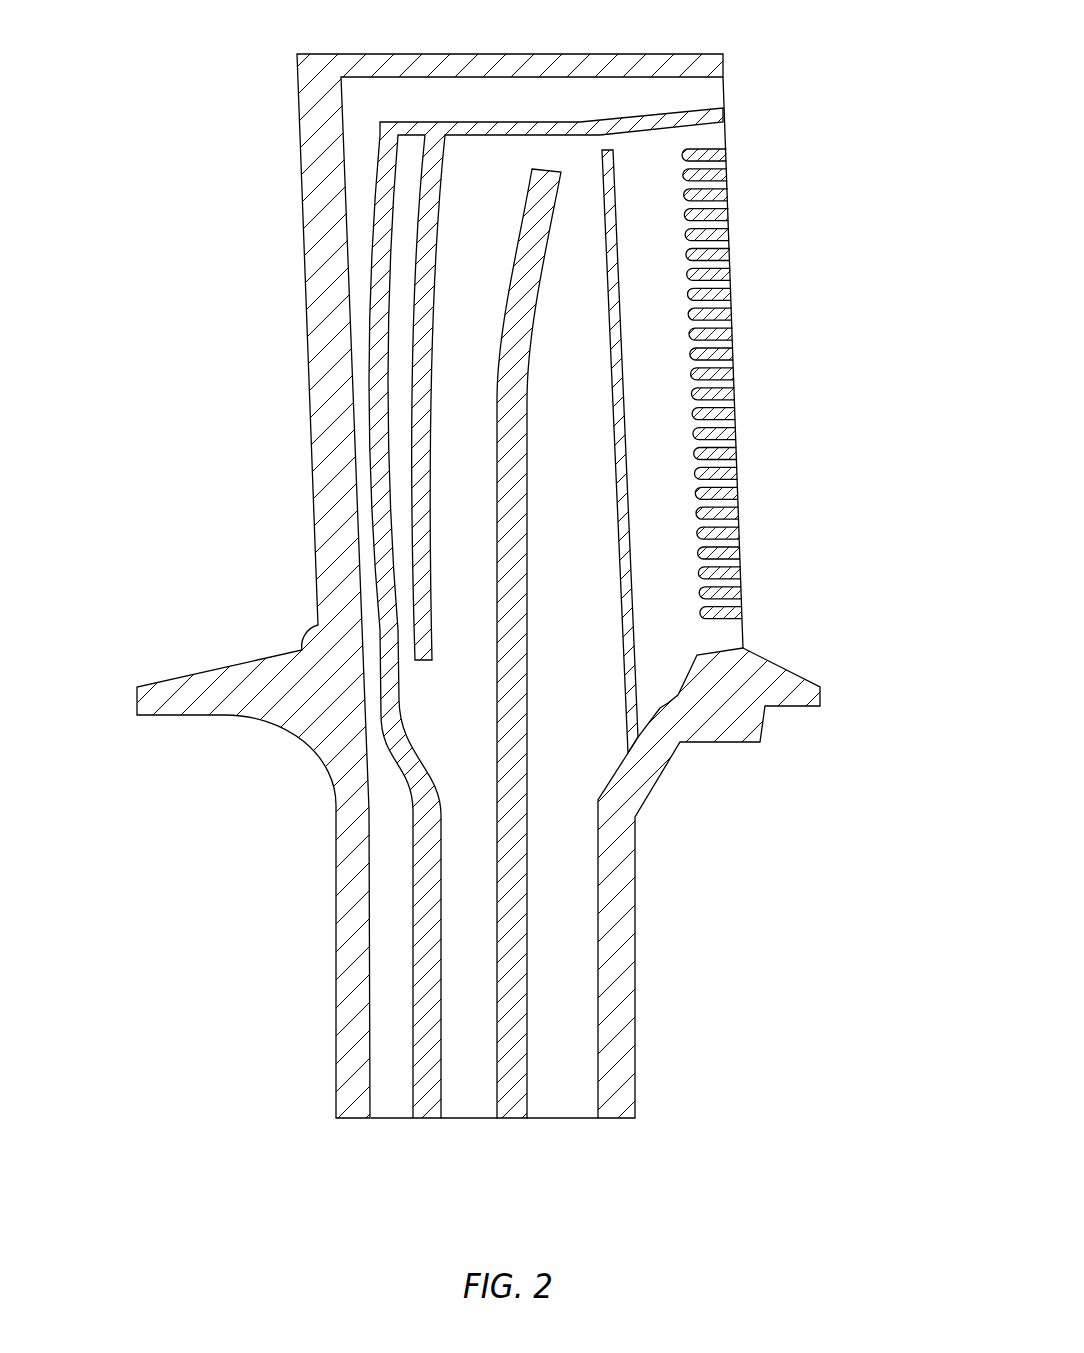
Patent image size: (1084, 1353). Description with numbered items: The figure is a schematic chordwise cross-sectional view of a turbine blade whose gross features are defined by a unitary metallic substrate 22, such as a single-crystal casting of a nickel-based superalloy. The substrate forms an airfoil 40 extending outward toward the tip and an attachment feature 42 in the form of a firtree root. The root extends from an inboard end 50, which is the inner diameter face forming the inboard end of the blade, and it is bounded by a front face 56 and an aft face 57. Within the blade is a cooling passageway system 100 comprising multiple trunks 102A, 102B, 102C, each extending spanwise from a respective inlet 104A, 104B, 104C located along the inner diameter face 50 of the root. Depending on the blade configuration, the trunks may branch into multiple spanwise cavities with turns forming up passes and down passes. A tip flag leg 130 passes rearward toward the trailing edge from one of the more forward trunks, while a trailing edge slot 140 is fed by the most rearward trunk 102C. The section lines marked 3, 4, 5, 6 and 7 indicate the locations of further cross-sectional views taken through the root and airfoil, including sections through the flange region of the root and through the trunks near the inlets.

The airfoil 40 is at (196, 338).
The attachment feature 42 is at (782, 899).
The metallic substrate 22 is at (727, 690).
The inboard end 50 is at (351, 1118).
The front face 56 is at (337, 965).
The aft face 57 is at (637, 843).
The cooling passageway system 100 is at (569, 880).
The trunk 102A is at (395, 1017).
The trunk 102B is at (472, 967).
The trunk 102C is at (553, 1038).
The inlet 104A is at (386, 1124).
The inlet 104B is at (467, 1124).
The inlet 104C is at (562, 1124).
The tip flag leg 130 is at (573, 100).
The trailing edge slot 140 is at (716, 181).
The section line 3- 3 is at (290, 693).
The section line 4- 4 is at (460, 967).
The section line 5- 5 is at (356, 917).
The section line 6- 6 is at (223, 745).
The section line 7- 7 is at (482, 69).